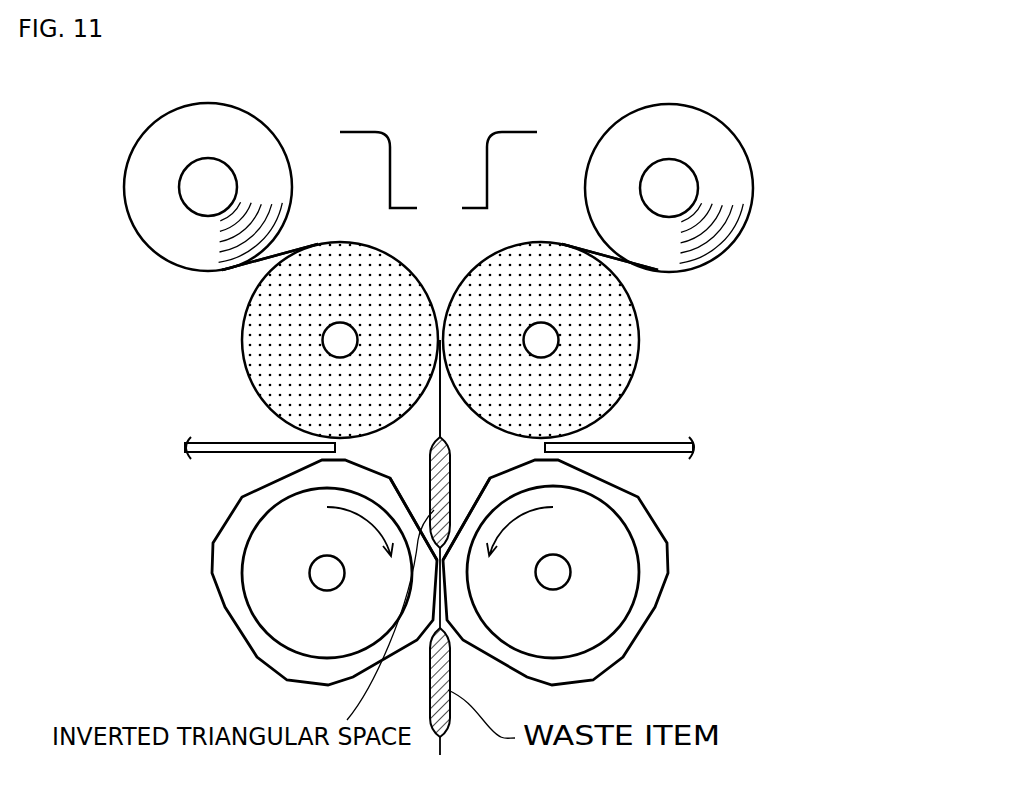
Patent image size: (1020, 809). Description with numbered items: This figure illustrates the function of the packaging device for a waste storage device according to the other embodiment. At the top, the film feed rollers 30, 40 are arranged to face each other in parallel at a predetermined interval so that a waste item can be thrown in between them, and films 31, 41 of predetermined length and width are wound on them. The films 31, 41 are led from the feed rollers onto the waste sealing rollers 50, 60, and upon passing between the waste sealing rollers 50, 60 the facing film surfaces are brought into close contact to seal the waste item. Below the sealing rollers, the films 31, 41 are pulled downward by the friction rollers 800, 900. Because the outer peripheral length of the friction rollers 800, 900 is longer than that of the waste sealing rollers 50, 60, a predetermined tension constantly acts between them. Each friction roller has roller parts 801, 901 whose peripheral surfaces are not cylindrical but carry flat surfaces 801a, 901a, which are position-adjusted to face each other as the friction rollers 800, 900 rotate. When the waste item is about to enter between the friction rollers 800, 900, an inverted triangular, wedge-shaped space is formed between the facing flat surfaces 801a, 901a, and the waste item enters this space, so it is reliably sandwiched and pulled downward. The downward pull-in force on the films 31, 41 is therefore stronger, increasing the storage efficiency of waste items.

The film feed roller 30 is at (740, 148).
The film 31 is at (585, 246).
The film feed roller 40 is at (130, 175).
The film 41 is at (302, 247).
The waste sealing roller 50 is at (637, 315).
The waste sealing roller 60 is at (244, 321).
The friction roller 800 is at (654, 481).
The roller part 801 is at (619, 448).
The flat surface 801a is at (467, 507).
The friction roller 900 is at (218, 506).
The roller part 901 is at (260, 448).
The flat surface 901a is at (418, 518).